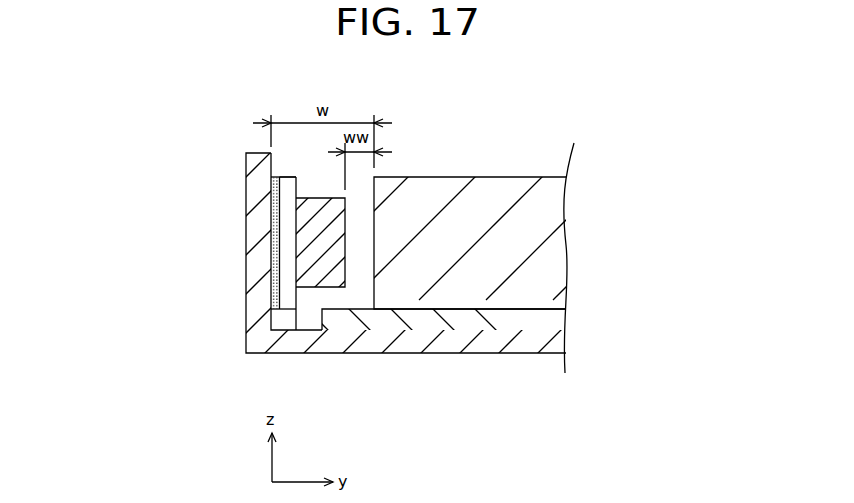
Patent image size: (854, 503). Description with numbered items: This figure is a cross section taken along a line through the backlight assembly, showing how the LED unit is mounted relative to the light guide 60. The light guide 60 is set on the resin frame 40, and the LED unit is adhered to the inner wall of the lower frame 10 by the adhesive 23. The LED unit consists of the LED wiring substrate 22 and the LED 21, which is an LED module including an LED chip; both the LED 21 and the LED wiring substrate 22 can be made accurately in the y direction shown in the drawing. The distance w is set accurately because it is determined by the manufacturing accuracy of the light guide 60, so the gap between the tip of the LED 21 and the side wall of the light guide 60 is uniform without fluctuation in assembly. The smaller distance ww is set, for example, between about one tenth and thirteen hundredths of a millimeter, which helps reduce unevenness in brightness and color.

The lower frame 10 is at (247, 308).
The LED 21 is at (317, 254).
The LED wiring substrate 22 is at (288, 230).
The adhesive 23 is at (276, 195).
The resin frame 40 is at (440, 318).
The light guide 60 is at (515, 177).